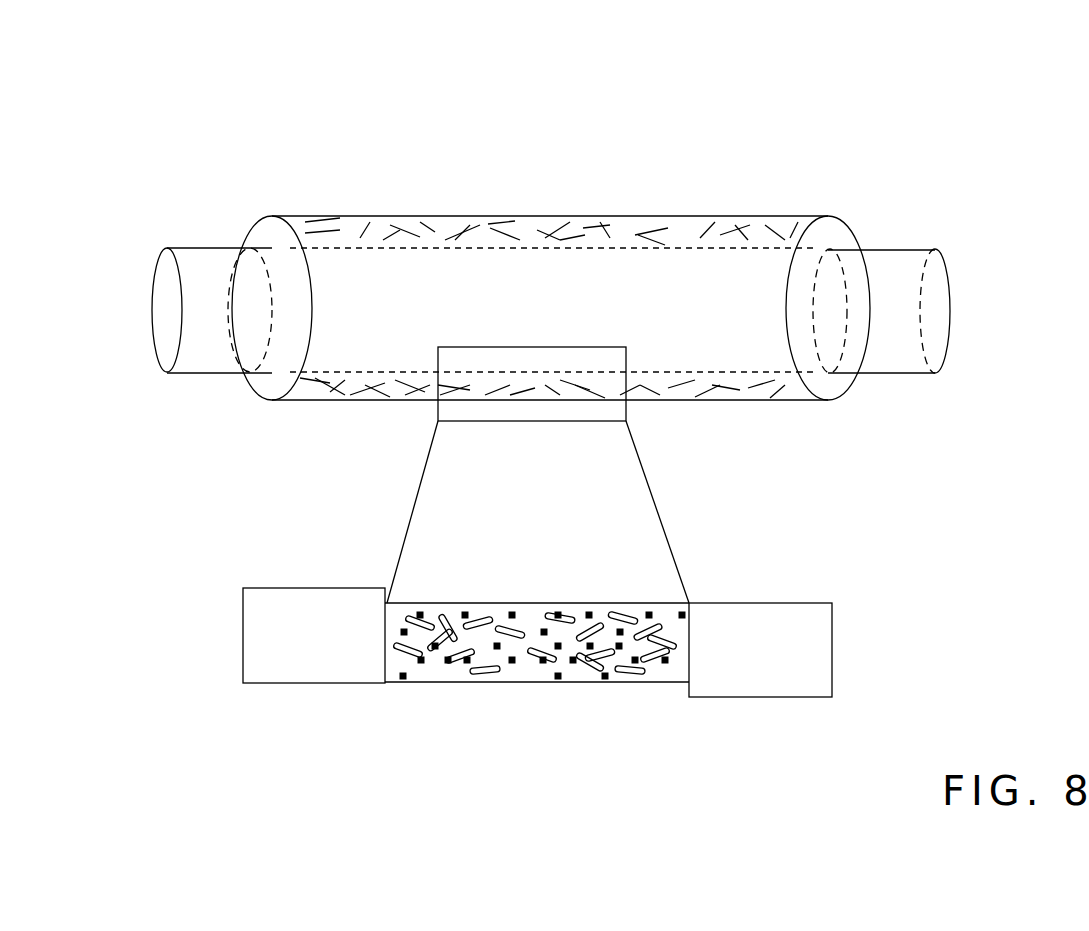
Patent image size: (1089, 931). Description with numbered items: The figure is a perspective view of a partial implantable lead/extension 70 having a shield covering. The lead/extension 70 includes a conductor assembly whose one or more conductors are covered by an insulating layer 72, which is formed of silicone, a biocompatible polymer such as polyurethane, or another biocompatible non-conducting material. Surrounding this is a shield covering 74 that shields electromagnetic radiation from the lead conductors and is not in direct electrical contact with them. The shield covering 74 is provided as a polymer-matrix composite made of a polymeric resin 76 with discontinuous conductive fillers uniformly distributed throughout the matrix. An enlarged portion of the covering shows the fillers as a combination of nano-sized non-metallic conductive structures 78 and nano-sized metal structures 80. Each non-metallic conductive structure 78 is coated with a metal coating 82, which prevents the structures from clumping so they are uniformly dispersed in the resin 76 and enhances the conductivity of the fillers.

The lead/extension 70 is at (778, 160).
The insulating layer 72 is at (838, 225).
The shield covering 74 is at (436, 216).
The polymeric resin 76 is at (356, 225).
The nano-sized non-metallic conductive structures 78 is at (478, 682).
The nano-sized metal structures 80 is at (607, 682).
The metal coating 82 is at (532, 682).